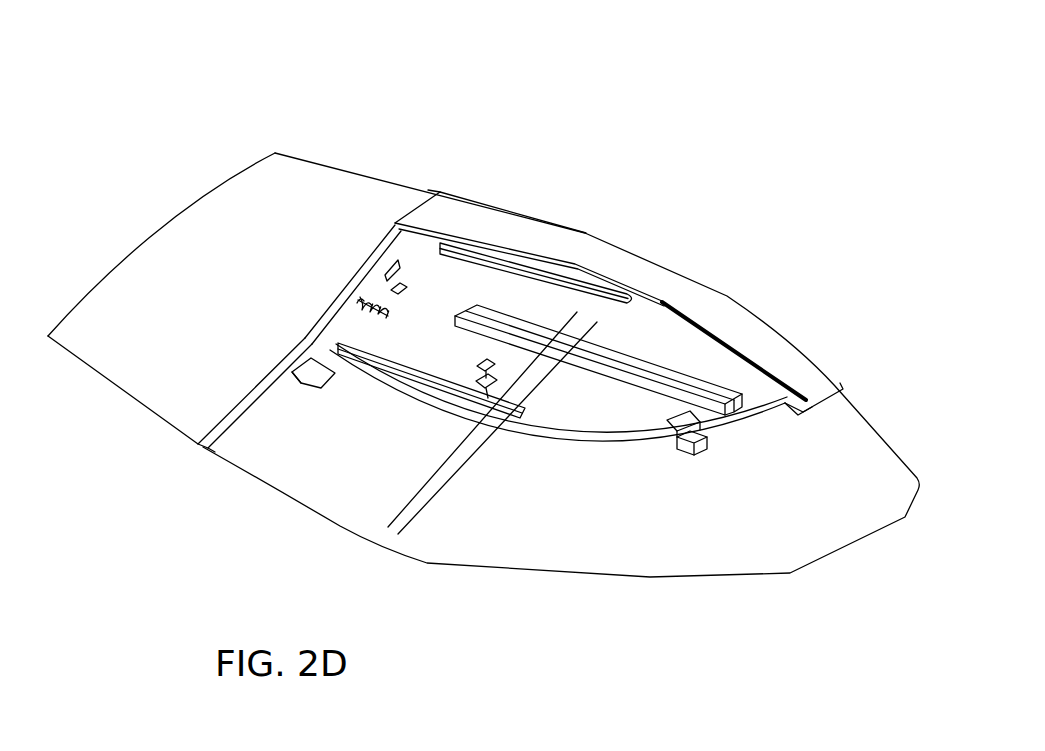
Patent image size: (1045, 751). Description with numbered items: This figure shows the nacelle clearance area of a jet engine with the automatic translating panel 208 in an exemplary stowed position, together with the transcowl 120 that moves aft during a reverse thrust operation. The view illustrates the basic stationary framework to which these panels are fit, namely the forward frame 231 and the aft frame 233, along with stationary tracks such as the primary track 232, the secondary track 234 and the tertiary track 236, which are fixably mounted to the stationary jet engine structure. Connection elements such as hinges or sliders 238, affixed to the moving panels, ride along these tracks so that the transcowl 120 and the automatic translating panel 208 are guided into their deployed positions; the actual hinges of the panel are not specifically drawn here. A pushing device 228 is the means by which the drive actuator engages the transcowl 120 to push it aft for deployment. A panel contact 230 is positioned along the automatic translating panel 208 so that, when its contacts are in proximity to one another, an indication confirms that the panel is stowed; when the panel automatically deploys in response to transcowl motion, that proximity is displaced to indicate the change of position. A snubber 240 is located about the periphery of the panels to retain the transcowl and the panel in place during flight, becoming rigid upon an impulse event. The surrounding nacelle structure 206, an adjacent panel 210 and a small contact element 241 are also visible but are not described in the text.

The transcowl 120 is at (290, 500).
The base shell 206 is at (602, 582).
The automatic translating panel 208 is at (493, 290).
The top plate 210 is at (474, 222).
The pushing device 228 is at (693, 447).
The panel contact 230 is at (490, 387).
The forward frame 231 is at (382, 255).
The primary track 232 is at (708, 386).
The aft frame 233 is at (437, 467).
The secondary track 234 is at (437, 393).
The tertiary track 236 is at (545, 270).
The hinges or sliders 238 is at (328, 363).
The snubber 240 is at (393, 258).
The contact tile 241 is at (396, 296).